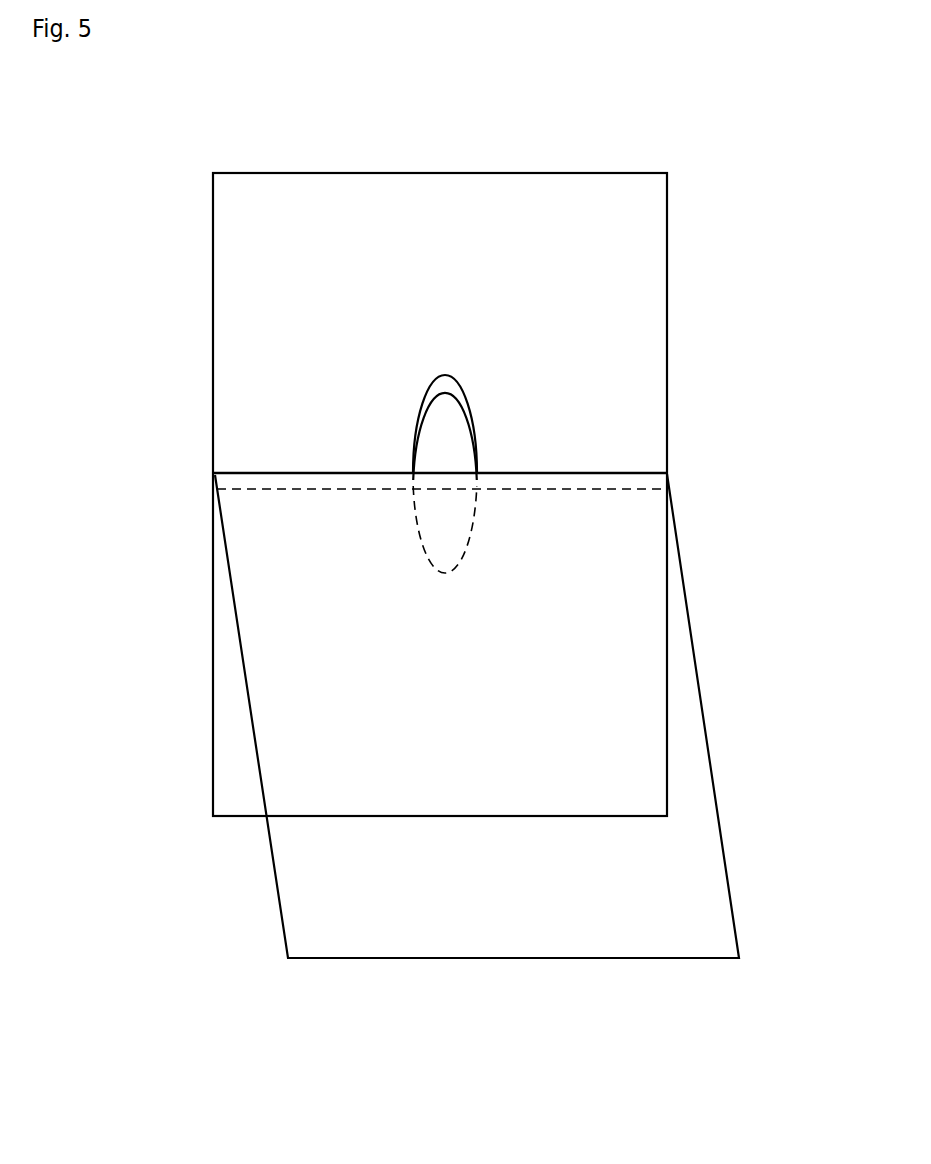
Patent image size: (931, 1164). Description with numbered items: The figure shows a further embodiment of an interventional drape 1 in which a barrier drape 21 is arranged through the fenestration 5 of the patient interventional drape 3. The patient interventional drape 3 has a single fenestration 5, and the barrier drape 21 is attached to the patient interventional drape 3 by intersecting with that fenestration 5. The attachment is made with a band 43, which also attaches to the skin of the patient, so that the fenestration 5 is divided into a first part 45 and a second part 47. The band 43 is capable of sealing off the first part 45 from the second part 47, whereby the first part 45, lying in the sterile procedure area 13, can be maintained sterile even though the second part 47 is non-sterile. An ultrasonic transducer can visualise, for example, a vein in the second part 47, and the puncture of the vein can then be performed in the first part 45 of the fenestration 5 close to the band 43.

The interventional drape 1 is at (734, 300).
The patient interventional drape 3 is at (669, 190).
The fenestration 5 is at (479, 451).
The sterile procedure area 13 is at (608, 359).
The barrier drape 21 is at (704, 870).
The band 43 is at (654, 482).
The first part 45 is at (445, 419).
The second part 47 is at (445, 523).